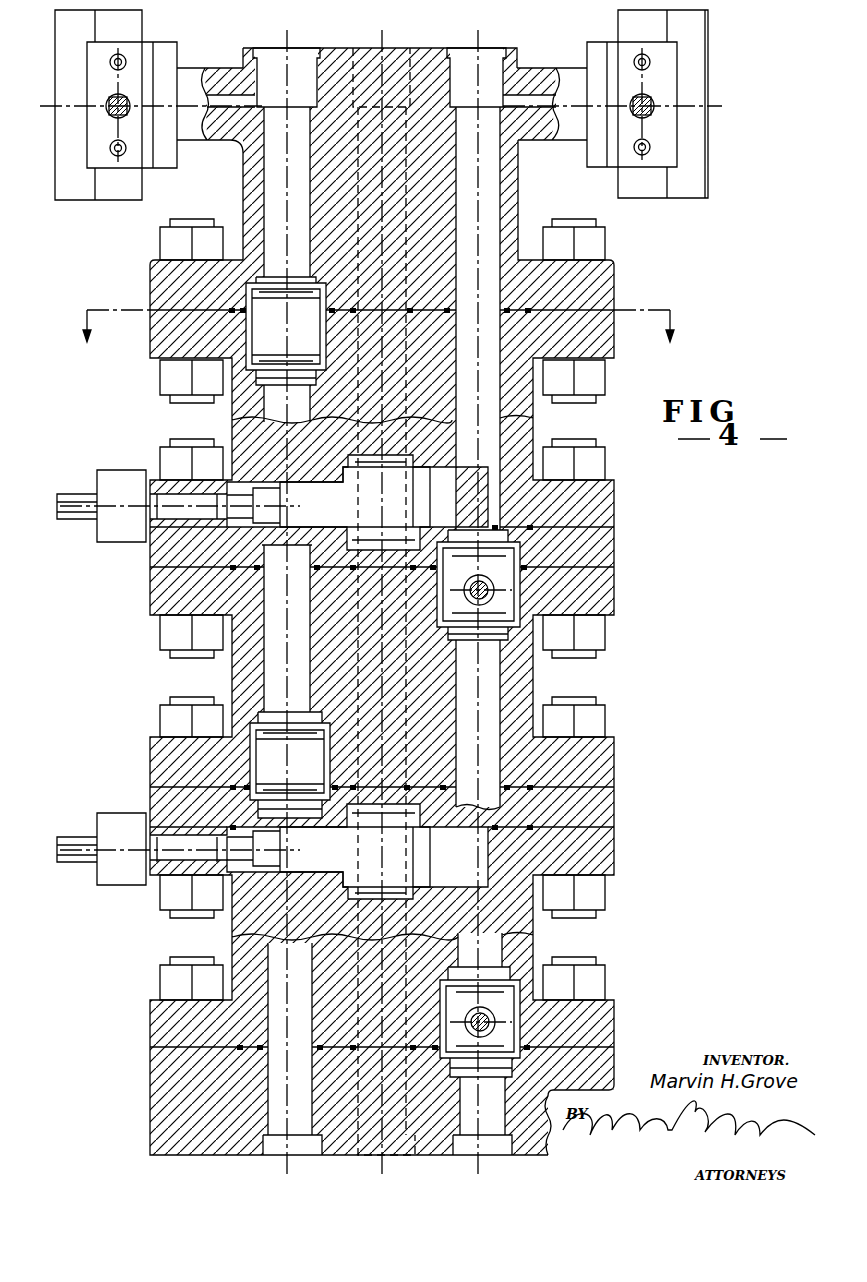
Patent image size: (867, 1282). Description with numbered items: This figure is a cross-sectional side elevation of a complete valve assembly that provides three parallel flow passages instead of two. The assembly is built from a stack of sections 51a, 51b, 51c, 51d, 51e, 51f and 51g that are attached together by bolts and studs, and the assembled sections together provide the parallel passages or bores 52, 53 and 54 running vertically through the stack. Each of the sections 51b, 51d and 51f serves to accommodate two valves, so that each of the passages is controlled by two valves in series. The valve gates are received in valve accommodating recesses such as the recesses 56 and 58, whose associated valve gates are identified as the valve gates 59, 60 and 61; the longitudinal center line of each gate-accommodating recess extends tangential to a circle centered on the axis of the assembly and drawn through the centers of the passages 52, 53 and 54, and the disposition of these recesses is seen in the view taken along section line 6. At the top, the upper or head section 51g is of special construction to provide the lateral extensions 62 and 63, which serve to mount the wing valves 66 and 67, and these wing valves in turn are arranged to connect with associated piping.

The section line 6- 6 is at (377, 314).
The section 51a is at (155, 1080).
The section 51b is at (533, 946).
The section 51c is at (614, 810).
The section 51d is at (533, 682).
The section 51e is at (614, 552).
The section 51f is at (528, 428).
The upper or head section 51g is at (518, 192).
The passage 52 is at (270, 66).
The passage 53 is at (370, 62).
The passage 54 is at (463, 68).
The valve accommodating recess 56 is at (246, 333).
The valve accommodating recess 58 is at (490, 503).
The valve gate 59 is at (318, 344).
The valve gate 60 is at (448, 600).
The valve gate 61 is at (413, 492).
The lateral extension 62 is at (197, 70).
The lateral extension 63 is at (563, 70).
The wing valve 66 is at (100, 212).
The wing valve 67 is at (718, 91).